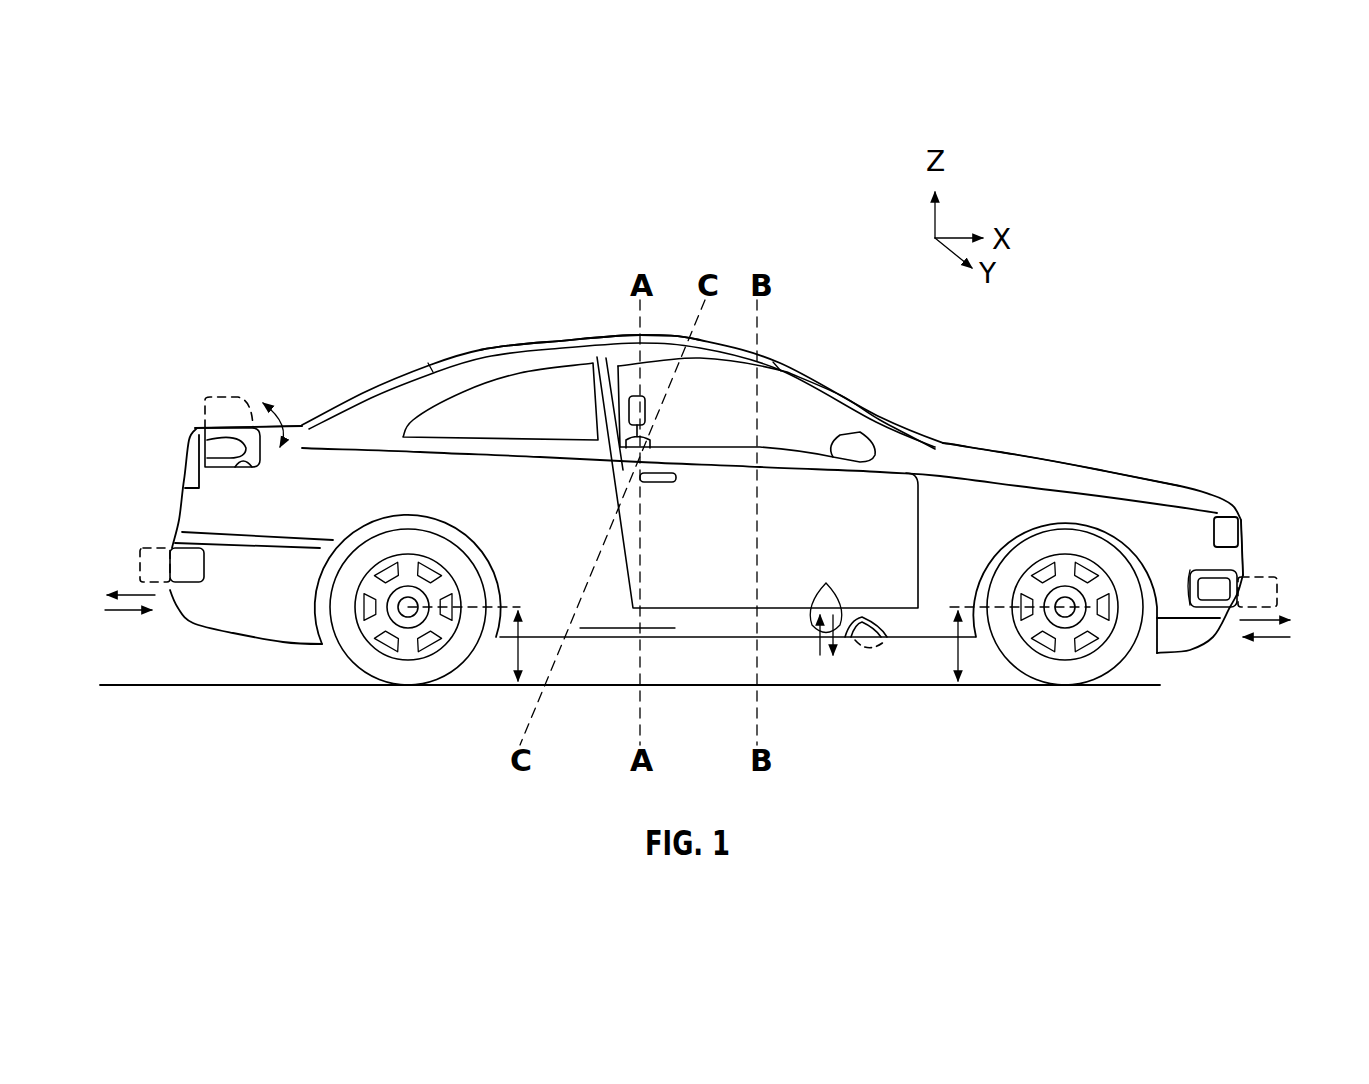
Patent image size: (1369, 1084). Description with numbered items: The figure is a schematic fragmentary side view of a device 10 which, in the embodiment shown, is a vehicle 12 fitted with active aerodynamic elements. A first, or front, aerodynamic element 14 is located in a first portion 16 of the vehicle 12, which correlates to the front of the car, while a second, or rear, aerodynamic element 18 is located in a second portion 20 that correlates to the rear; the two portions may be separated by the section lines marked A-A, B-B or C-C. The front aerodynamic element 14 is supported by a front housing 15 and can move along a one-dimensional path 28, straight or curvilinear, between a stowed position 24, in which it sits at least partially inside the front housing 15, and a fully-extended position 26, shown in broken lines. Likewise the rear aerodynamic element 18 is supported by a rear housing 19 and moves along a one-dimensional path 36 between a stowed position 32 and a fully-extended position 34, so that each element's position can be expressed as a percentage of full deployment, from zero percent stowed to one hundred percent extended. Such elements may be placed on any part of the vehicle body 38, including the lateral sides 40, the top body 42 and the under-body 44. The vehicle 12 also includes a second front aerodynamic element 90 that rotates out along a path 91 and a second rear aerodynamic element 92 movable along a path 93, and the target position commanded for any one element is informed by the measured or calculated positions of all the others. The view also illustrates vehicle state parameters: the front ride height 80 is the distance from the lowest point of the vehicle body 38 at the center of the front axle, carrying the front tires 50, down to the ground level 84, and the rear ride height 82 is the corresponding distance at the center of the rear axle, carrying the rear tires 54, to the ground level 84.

The device 10 is at (577, 243).
The vehicle 12 is at (681, 232).
The first aerodynamic element 14 is at (1270, 538).
The front housing 15 is at (1197, 566).
The first portion 16 is at (997, 400).
The second aerodynamic element 18 is at (197, 375).
The rear housing 19 is at (258, 460).
The second portion 20 is at (340, 310).
The stowed position 24 is at (1213, 628).
The fully-extended position 26 is at (1268, 577).
The one-dimensional path 28 is at (1272, 640).
The stowed position 32 is at (230, 432).
The fully-extended position 34 is at (232, 398).
The one-dimensional path 36 is at (285, 410).
The vehicle body 38 is at (825, 378).
The lateral sides 40 is at (902, 528).
The top body 42 is at (572, 337).
The under-body 44 is at (688, 643).
The front tires 50 is at (1005, 660).
The rear tires 54 is at (345, 663).
The front ride height 80 is at (957, 626).
The rear ride height 82 is at (530, 622).
The ground level 84 is at (263, 685).
The second front aerodynamic element 90 is at (870, 657).
The path 91 is at (826, 584).
The second rear aerodynamic element 92 is at (148, 542).
The path 93 is at (133, 600).